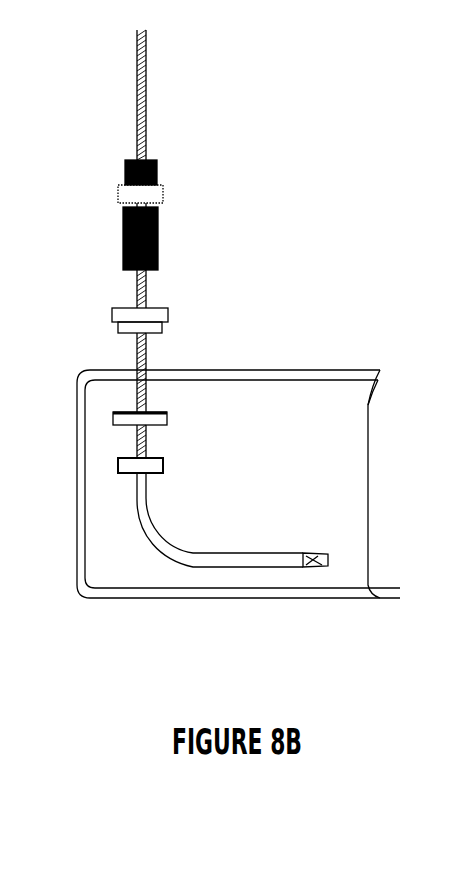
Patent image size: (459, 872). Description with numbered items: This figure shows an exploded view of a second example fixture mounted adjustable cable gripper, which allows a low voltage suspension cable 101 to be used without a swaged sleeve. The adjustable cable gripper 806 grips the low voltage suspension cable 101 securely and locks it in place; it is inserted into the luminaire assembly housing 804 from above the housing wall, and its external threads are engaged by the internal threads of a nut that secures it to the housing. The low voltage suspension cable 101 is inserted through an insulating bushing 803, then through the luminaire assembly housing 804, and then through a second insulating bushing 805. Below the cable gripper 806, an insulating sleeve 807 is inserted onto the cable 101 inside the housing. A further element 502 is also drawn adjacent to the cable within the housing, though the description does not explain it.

The low voltage suspension cable 101 is at (147, 91).
The adjustable cable gripper 806 is at (158, 182).
The insulating bushing 803 is at (112, 311).
The luminaire assembly housing 804 is at (292, 370).
The insulating bushing 805 is at (168, 413).
The block 502 is at (164, 462).
The insulating sleeve 807 is at (257, 552).